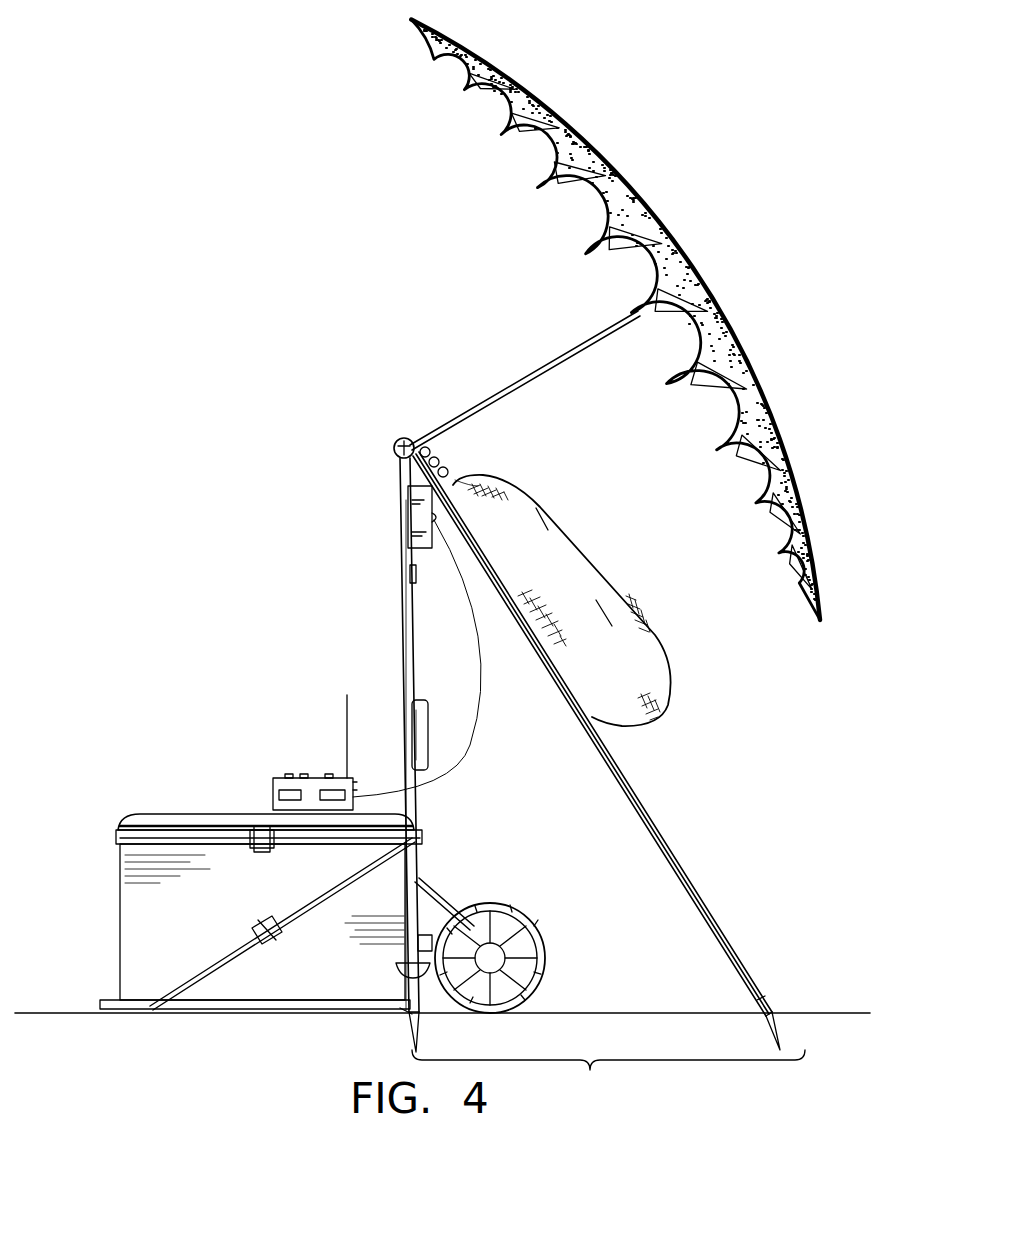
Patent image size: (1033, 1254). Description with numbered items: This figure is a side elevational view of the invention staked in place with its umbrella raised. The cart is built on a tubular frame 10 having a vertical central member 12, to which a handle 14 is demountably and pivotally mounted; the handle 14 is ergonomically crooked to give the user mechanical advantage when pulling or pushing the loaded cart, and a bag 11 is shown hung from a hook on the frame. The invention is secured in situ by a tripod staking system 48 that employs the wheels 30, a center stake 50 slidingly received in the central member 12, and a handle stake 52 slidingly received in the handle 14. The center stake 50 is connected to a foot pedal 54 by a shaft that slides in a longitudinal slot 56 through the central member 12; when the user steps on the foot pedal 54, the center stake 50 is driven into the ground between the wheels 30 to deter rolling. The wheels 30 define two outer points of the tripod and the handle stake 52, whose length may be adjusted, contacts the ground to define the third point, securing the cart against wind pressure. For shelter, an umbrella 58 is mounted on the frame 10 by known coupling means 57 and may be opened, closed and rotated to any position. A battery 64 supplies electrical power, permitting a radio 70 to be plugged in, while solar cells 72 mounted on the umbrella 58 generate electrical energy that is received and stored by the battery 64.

The tubular frame 10 is at (400, 588).
The bag 11 is at (662, 712).
The vertical central member 12 is at (420, 797).
The handle 14 is at (648, 810).
The wheels 30 is at (545, 930).
The tripod staking system 48 is at (608, 1075).
The center stake 50 is at (420, 1036).
The handle stake 52 is at (785, 1037).
The foot pedal 54 is at (396, 970).
The longitudinal slot 56 is at (405, 1016).
The coupling means 57 is at (394, 447).
The umbrella 58 is at (618, 170).
The battery 64 is at (430, 548).
The radio 70 is at (273, 790).
The solar cells 72 is at (592, 252).